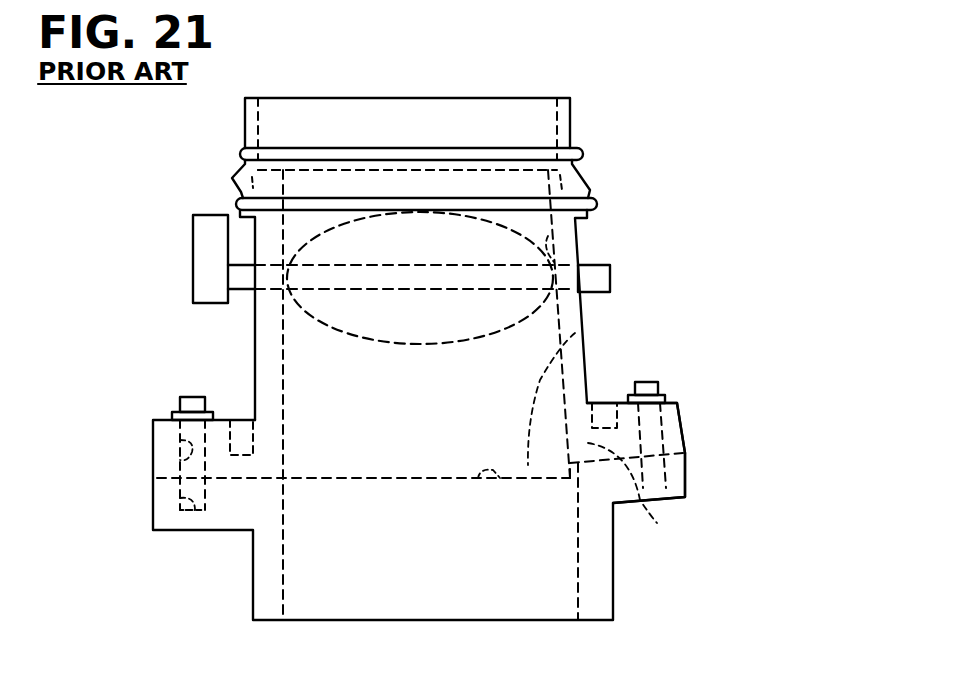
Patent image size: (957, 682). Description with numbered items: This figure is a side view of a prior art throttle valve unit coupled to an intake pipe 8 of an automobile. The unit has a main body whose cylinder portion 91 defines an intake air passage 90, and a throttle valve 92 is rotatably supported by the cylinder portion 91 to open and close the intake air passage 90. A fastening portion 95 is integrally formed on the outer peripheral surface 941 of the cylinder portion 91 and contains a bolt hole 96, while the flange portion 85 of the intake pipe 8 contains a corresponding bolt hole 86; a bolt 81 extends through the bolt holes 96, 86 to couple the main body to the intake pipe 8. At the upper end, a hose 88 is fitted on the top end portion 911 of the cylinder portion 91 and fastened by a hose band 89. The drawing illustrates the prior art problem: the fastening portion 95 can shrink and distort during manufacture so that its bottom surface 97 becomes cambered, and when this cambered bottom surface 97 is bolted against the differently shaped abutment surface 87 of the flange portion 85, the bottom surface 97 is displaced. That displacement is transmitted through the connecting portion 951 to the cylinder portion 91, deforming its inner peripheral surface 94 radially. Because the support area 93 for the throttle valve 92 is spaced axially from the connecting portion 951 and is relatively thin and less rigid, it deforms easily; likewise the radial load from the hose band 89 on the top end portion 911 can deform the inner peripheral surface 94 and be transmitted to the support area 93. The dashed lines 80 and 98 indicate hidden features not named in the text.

The intake pipe 8 is at (617, 590).
The intake passage wall 80 is at (578, 598).
The bolt 81 is at (190, 402).
The flange portion 85 is at (680, 488).
The bolt hole 86 is at (190, 502).
The abutment surface 87 is at (480, 478).
The hose 88 is at (566, 128).
The hose band 89 is at (240, 153).
The intake air passage 90 is at (519, 185).
The cylinder portion 91 is at (572, 332).
The top end portion 911 is at (565, 185).
The throttle valve 92 is at (393, 277).
The support area 93 is at (268, 282).
The inner peripheral surface 94 is at (548, 236).
The outer peripheral surface 941 is at (252, 418).
The fastening portion 95 is at (668, 430).
The connecting portion 951 is at (640, 499).
The bolt hole 96 is at (178, 442).
The bottom surface 97 is at (575, 333).
The recess 98 is at (601, 418).